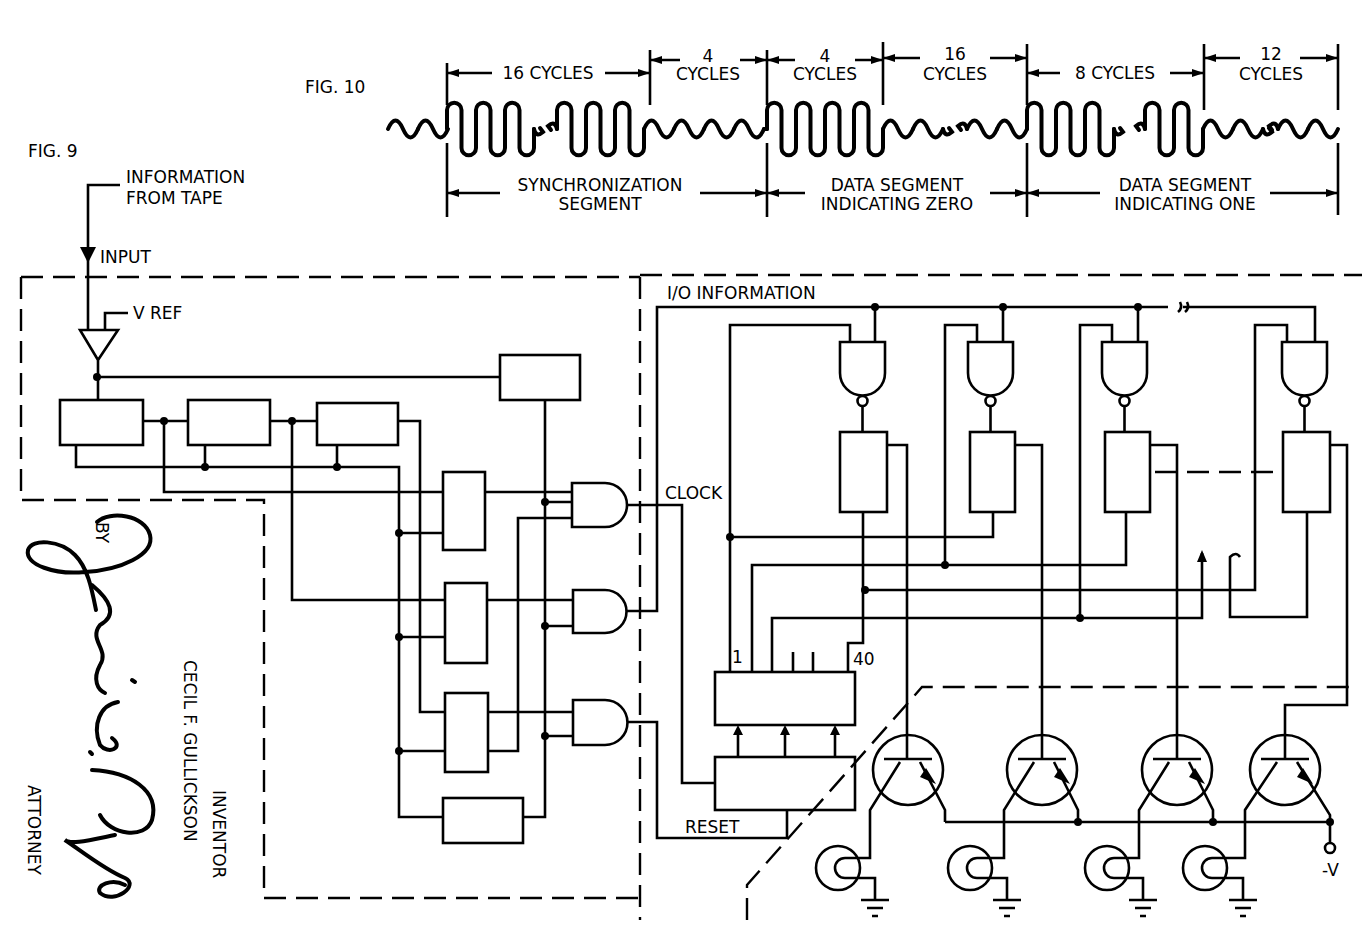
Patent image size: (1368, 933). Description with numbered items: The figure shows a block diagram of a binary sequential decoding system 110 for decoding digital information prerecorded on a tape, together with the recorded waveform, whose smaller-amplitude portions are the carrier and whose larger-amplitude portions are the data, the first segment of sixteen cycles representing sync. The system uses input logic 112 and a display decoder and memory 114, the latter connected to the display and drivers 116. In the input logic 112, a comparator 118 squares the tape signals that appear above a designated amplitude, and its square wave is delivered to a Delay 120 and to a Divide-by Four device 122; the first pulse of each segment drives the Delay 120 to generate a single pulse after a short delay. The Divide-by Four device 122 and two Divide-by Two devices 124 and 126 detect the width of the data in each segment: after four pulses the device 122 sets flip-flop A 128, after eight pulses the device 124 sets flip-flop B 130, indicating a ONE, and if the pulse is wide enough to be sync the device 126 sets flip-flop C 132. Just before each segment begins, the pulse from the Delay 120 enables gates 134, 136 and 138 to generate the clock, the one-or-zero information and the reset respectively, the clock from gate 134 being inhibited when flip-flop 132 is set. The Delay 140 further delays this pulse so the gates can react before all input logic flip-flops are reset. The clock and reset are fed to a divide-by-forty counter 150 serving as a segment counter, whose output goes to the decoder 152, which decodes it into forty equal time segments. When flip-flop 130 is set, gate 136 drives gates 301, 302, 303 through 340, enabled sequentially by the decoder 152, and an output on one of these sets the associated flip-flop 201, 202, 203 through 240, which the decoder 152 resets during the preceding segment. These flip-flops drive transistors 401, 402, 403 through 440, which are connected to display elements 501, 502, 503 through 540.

The binary sequential decoding system 110 is at (370, 266).
The input logic 112 is at (265, 742).
The display decoder and memory 114 is at (870, 272).
The display and drivers 116 is at (1144, 683).
The comparator 118 is at (116, 343).
The Delay 120 is at (529, 355).
The Divide-by Four device 122 is at (86, 400).
The Divide-by Two device 124 is at (220, 400).
The Divide-by Two device 126 is at (350, 403).
The flip-flop A 128 is at (487, 482).
The flip-flop B 130 is at (492, 582).
The flip-flop C 132 is at (470, 772).
The gate 134 is at (582, 483).
The gate 136 is at (582, 590).
The gate 138 is at (582, 700).
The Delay 140 is at (480, 843).
The Divide by 40 counter 150 is at (835, 810).
The decoder 152 is at (855, 718).
The flip-flop 201 is at (840, 475).
The flip-flop 202 is at (1010, 430).
The flip-flop 203 is at (1142, 430).
The flip-flop 240 is at (1295, 512).
The gate 301 is at (885, 355).
The gate 302 is at (1013, 355).
The gate 303 is at (1147, 358).
The gate 340 is at (1284, 380).
The transistor 401 is at (943, 755).
The transistor 402 is at (1078, 755).
The transistor 403 is at (1213, 755).
The transistor 440 is at (1320, 755).
The display element 501 is at (820, 880).
The display element 502 is at (952, 880).
The display element 503 is at (1089, 880).
The display element 540 is at (1187, 880).